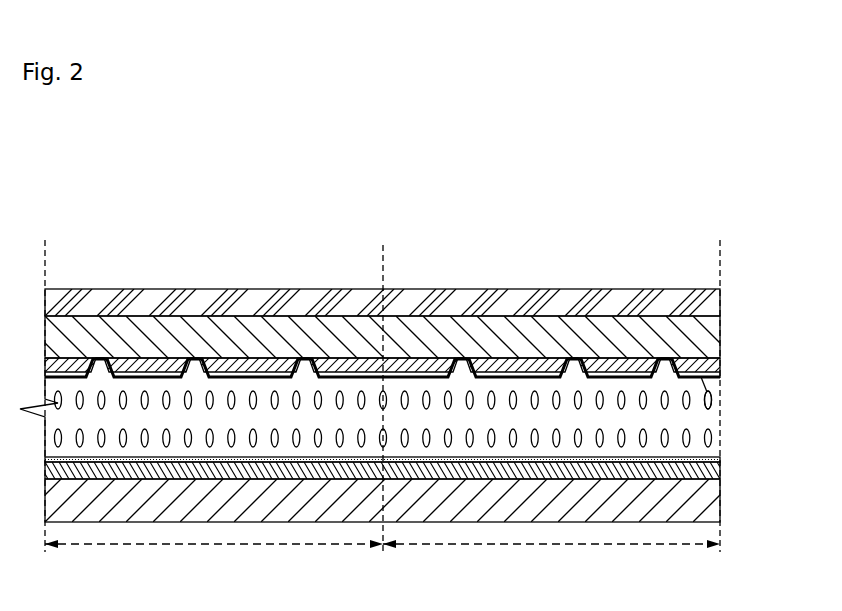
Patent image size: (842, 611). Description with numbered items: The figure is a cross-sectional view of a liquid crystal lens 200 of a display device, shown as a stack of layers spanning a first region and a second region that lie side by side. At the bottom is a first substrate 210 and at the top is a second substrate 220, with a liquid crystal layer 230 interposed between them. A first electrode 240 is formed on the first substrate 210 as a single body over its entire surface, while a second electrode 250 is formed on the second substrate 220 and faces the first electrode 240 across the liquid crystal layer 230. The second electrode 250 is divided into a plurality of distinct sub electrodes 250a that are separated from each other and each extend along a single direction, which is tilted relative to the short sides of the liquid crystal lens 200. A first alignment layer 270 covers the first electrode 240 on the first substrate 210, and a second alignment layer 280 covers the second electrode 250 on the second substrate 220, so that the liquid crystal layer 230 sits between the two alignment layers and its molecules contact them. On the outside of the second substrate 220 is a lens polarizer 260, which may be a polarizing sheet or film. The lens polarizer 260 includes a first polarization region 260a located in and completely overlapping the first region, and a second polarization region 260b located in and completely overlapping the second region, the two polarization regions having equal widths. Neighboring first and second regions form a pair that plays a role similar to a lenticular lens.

The liquid crystal lens 200 is at (640, 212).
The first substrate 210 is at (716, 500).
The second substrate 220 is at (716, 338).
The liquid crystal layer 230 is at (716, 421).
The first electrode 240 is at (718, 470).
The second electrode 250 is at (421, 308).
The sub electrode 250a is at (356, 358).
The lens polarizer 260 is at (422, 265).
The first polarization region 260a is at (235, 289).
The second polarization region 260b is at (532, 289).
The first alignment layer 270 is at (718, 459).
The second alignment layer 280 is at (709, 397).